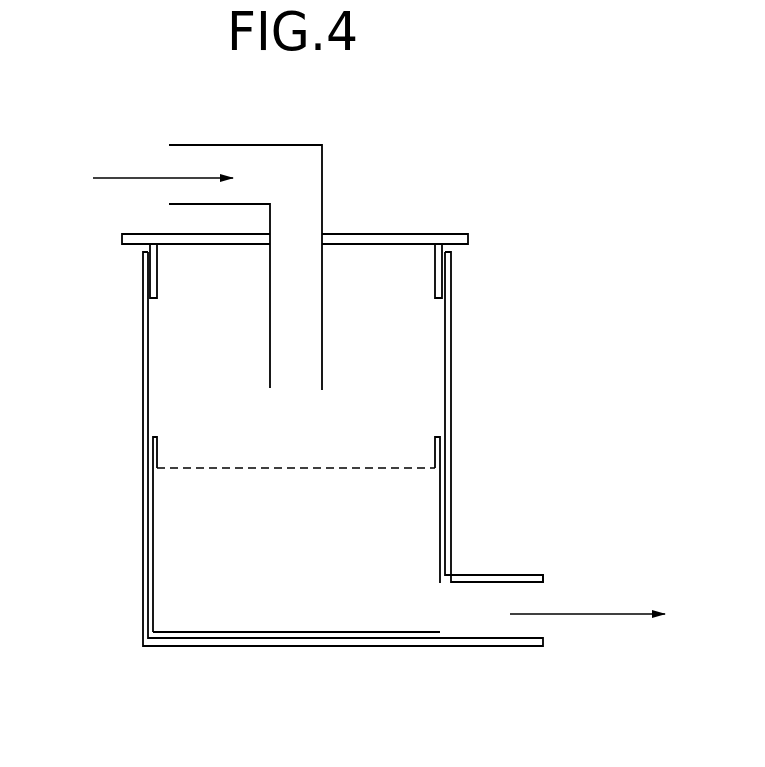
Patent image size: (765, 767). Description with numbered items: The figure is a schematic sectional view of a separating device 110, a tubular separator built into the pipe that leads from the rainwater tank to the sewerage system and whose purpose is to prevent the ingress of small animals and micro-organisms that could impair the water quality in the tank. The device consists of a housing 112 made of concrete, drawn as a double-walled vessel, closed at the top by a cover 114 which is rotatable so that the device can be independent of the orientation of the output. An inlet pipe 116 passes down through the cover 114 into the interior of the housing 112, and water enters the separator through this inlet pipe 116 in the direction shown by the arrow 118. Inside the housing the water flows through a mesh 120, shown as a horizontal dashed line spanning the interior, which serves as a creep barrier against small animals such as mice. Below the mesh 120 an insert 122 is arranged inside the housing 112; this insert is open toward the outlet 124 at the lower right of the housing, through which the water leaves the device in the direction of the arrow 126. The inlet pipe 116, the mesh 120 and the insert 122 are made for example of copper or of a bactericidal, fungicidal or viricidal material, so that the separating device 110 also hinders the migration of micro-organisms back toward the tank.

The separating device 110 is at (533, 288).
The housing 112 is at (143, 480).
The cover 114 is at (400, 233).
The inlet pipe 116 is at (207, 145).
The arrow 118 is at (127, 177).
The mesh 120 is at (397, 467).
The insert 122 is at (152, 587).
The outlet 124 is at (493, 574).
The arrow 126 is at (590, 613).